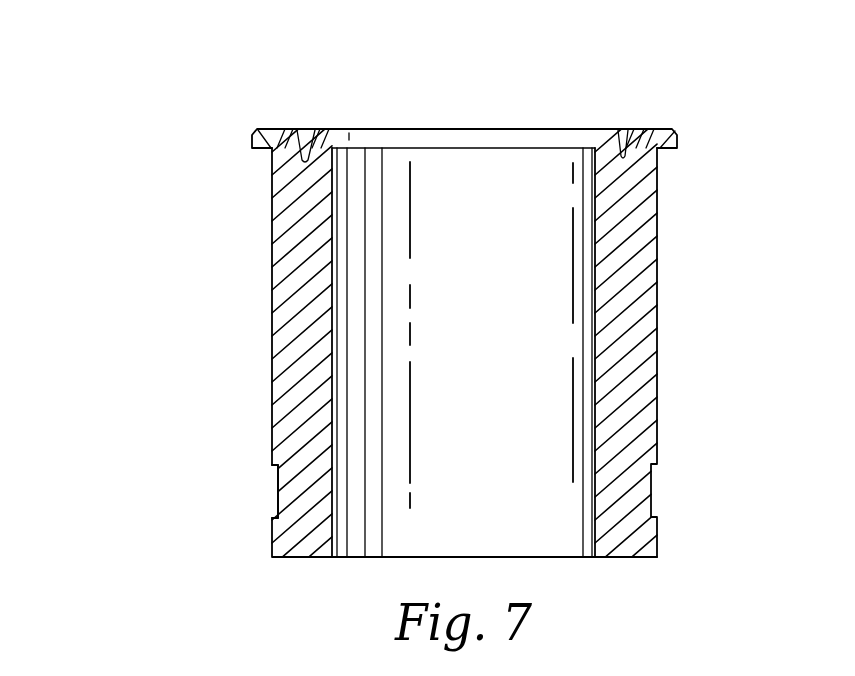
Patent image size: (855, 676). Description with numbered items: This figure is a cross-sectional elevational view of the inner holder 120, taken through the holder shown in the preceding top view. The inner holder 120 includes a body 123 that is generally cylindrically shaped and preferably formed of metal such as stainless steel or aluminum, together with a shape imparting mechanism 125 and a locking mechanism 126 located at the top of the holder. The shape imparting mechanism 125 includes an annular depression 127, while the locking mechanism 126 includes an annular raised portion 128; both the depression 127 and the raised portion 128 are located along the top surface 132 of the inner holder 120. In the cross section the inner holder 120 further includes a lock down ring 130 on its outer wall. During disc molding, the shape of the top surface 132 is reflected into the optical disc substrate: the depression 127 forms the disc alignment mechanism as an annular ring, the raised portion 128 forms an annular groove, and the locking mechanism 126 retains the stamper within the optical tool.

The inner holder 120 is at (170, 199).
The body 123 is at (657, 316).
The shape imparting mechanism 125 is at (590, 117).
The locking mechanism 126 is at (697, 129).
The annular depression 127 is at (619, 130).
The annular raised portion 128 is at (668, 130).
The lock down ring 130 is at (278, 490).
The top surface 132 is at (653, 130).